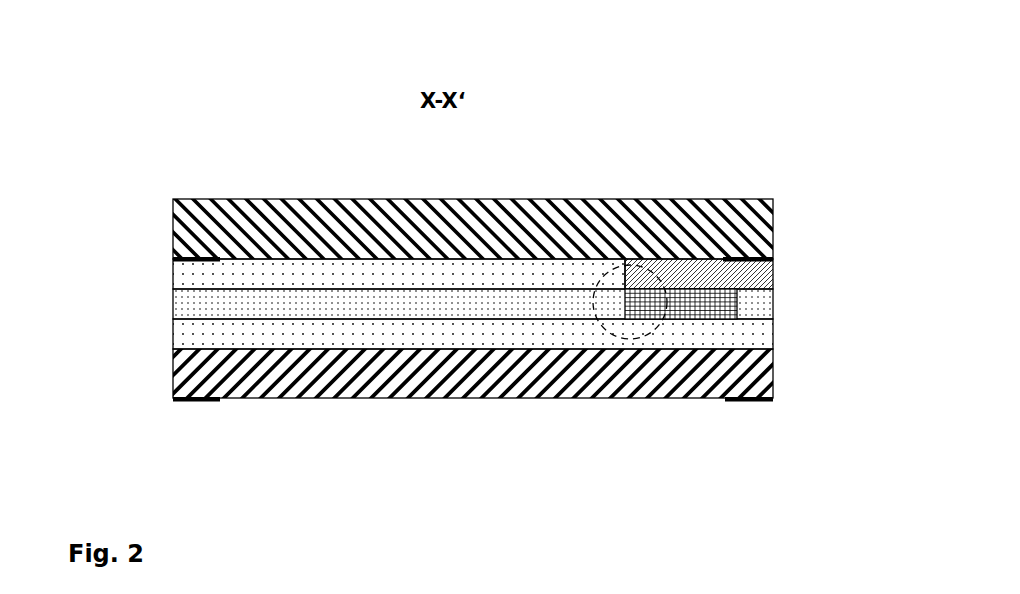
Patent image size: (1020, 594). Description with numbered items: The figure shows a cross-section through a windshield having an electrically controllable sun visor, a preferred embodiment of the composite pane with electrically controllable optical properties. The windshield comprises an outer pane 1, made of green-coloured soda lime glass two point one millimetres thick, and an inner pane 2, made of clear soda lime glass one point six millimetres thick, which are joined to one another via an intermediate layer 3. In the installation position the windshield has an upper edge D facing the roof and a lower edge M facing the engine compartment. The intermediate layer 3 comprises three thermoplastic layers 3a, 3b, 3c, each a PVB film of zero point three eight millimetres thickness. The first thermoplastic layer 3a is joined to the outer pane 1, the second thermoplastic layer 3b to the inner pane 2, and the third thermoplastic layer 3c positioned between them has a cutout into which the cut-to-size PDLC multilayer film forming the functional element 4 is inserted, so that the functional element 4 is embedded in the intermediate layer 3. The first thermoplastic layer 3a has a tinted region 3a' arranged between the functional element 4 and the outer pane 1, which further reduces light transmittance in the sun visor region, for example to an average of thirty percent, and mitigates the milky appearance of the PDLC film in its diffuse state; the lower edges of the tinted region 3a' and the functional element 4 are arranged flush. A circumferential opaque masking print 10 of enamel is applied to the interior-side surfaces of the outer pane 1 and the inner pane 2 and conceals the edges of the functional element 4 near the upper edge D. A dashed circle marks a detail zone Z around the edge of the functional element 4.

The outer pane 1 is at (185, 207).
The inner pane 2 is at (251, 388).
The intermediate layer 3 is at (469, 308).
The first thermoplastic layer 3a is at (369, 252).
The tinted region 3a' is at (731, 274).
The second thermoplastic layer 3b is at (760, 338).
The third thermoplastic layer 3c is at (445, 350).
The functional element 4 is at (725, 303).
The masking print 10 is at (773, 260).
The lower edge M is at (168, 216).
The upper edge D is at (778, 218).
The detail zone Z is at (646, 338).